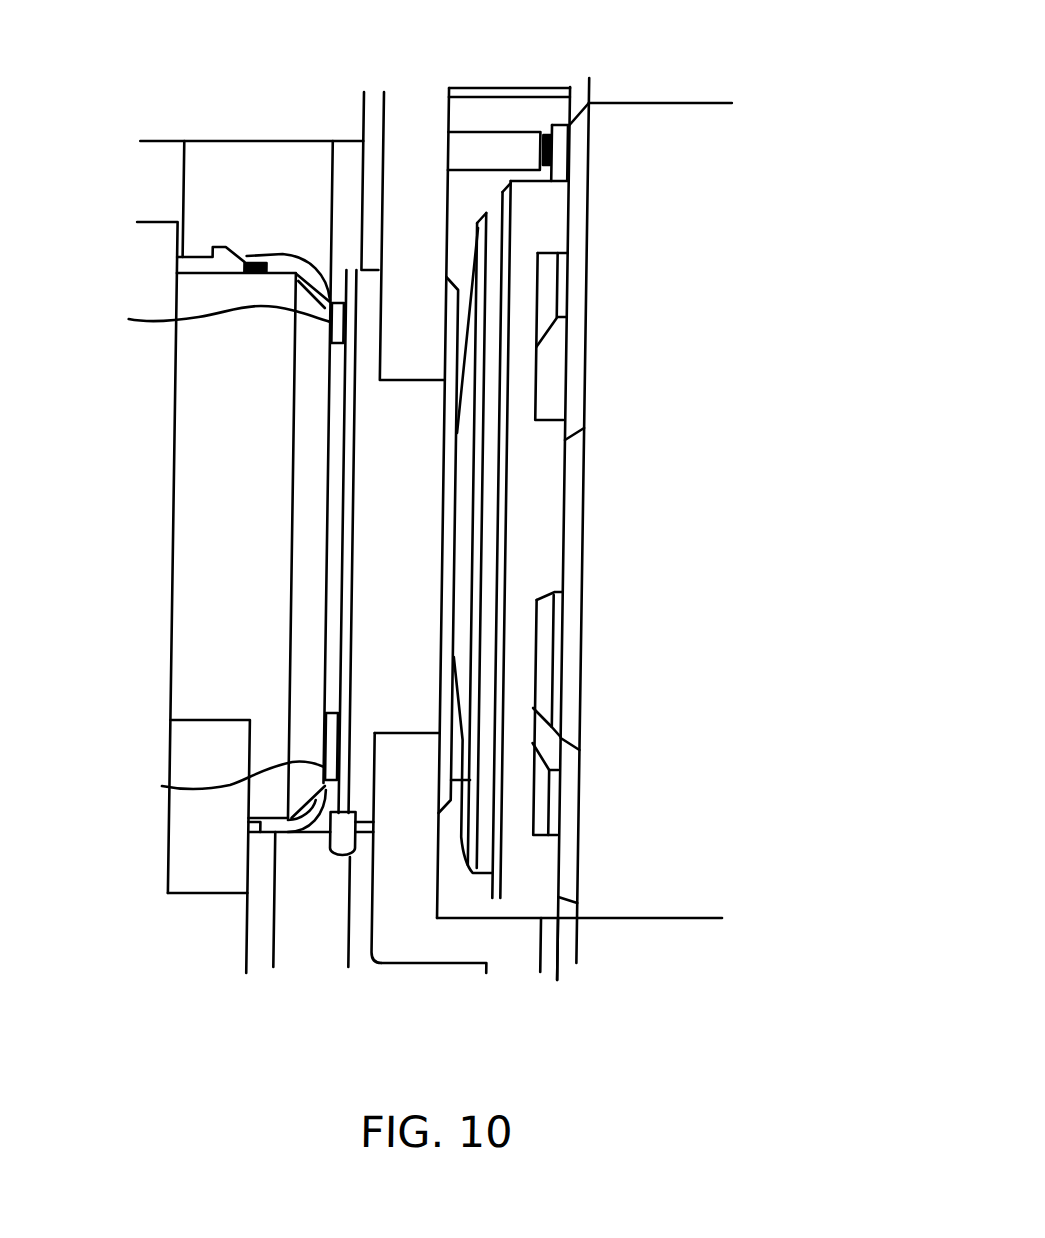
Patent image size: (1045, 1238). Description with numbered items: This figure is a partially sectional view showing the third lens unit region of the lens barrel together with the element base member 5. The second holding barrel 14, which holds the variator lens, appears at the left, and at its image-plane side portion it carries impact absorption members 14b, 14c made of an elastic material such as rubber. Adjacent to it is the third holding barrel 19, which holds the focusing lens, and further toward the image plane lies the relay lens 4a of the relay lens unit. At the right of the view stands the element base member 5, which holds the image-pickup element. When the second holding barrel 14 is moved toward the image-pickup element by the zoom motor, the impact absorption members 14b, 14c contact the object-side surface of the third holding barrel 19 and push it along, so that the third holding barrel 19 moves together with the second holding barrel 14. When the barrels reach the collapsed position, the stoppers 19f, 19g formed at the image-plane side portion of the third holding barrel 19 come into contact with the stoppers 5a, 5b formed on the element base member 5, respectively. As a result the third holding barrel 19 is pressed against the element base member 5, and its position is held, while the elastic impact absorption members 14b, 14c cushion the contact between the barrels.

The second holding barrel 14 is at (220, 472).
The impact absorption member 14b is at (331, 323).
The impact absorption member 14c is at (333, 768).
The third holding barrel 19 is at (408, 863).
The stopper 19f is at (498, 142).
The stopper 19g is at (479, 952).
The relay lens 4a is at (462, 510).
The element base member 5 is at (648, 633).
The stopper 5a is at (558, 157).
The stopper 5b is at (560, 940).